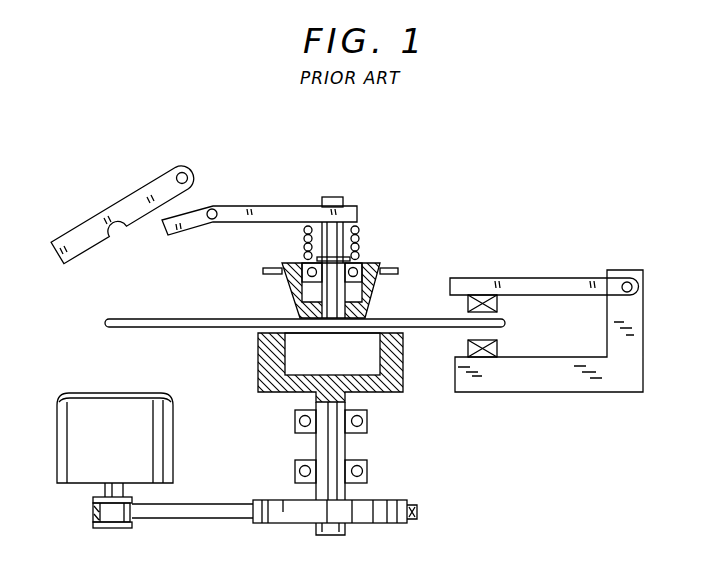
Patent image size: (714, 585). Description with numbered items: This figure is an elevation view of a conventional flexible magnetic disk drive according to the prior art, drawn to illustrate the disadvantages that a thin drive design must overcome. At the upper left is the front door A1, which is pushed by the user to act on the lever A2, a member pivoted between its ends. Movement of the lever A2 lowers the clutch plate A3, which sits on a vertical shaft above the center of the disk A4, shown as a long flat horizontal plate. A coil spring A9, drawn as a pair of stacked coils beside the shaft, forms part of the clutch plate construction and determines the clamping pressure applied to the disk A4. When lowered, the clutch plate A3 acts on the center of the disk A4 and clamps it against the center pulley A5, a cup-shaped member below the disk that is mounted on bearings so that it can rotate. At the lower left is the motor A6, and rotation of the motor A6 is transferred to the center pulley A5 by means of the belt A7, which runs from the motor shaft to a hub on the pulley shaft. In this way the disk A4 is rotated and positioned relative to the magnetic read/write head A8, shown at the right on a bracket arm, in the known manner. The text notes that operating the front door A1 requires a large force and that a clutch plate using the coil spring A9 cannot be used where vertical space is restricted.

The front door A1 is at (138, 197).
The lever A2 is at (265, 210).
The clutch plate A3 is at (398, 270).
The disk A4 is at (192, 329).
The center pulley A5 is at (263, 379).
The motor A6 is at (65, 478).
The belt A7 is at (197, 513).
The magnetic read/write head A8 is at (550, 242).
The coil spring A9 is at (359, 238).